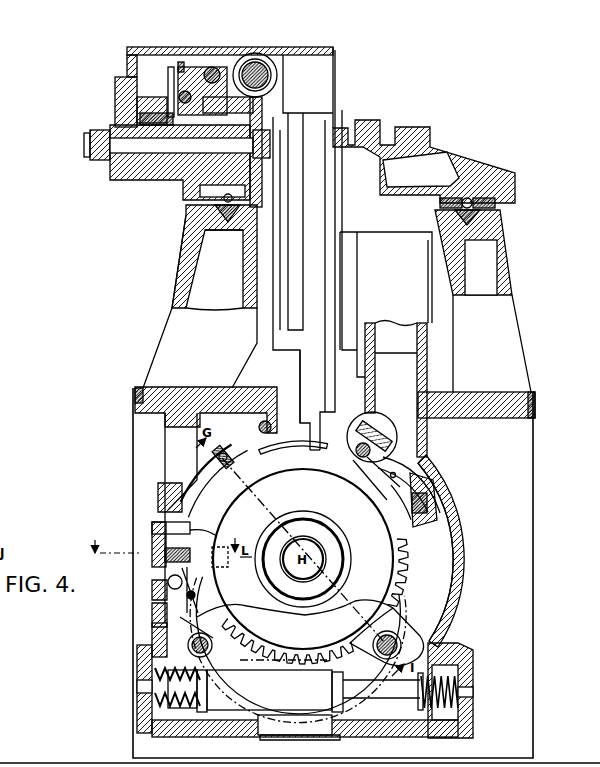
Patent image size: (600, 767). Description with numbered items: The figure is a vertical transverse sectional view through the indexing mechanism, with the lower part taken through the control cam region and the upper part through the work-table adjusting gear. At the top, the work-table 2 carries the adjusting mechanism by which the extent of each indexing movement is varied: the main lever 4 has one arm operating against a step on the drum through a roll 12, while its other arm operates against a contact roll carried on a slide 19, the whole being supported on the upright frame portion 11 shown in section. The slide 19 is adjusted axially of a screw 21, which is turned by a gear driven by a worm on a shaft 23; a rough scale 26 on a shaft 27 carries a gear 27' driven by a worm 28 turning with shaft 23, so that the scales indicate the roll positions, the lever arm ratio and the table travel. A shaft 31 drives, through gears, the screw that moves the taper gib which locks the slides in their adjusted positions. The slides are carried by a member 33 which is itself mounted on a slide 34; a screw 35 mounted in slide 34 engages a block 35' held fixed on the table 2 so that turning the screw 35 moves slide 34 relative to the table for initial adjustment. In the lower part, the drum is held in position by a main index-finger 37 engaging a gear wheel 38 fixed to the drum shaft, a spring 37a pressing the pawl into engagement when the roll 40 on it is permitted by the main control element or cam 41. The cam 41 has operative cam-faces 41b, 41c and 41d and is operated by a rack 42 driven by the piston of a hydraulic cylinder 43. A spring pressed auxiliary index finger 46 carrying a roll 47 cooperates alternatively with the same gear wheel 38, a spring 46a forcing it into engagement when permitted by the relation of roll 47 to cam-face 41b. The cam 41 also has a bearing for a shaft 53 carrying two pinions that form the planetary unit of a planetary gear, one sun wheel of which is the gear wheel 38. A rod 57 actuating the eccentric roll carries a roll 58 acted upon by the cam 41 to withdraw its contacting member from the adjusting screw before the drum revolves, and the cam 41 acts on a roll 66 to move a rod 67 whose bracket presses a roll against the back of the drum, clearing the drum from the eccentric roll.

The work-table 2 is at (160, 170).
The main lever 4 is at (313, 365).
The upright column 11 is at (173, 287).
The roll 12 is at (310, 440).
The slide 19 is at (290, 172).
The screw 21 is at (287, 275).
The shaft 23 is at (240, 62).
The rough scale 26 is at (103, 158).
The shaft 27 is at (190, 167).
The gear 27' is at (289, 144).
The worm 28 is at (259, 53).
The shaft 31 is at (197, 67).
The member 33 is at (270, 230).
The slide 34 is at (137, 100).
The screw 35 is at (123, 84).
The block 35' is at (162, 44).
The main index-finger 37 is at (200, 616).
The spring 37a is at (160, 623).
The gear wheel 38 is at (413, 570).
The roll 40 is at (180, 598).
The main control element 41 is at (388, 617).
The cam-face 41b is at (390, 493).
The cam-face 41c is at (123, 518).
The cam-face 41d is at (190, 530).
The rack 42 is at (238, 660).
The hydraulic cylinder 43 is at (327, 691).
The auxiliary index finger 46 is at (427, 527).
The spring 46a is at (395, 430).
The roll 47 is at (402, 465).
The shaft 53 is at (396, 634).
The rod 57 is at (216, 457).
The roll 58 is at (237, 448).
The roll 66 is at (190, 547).
The rod 67 is at (178, 578).